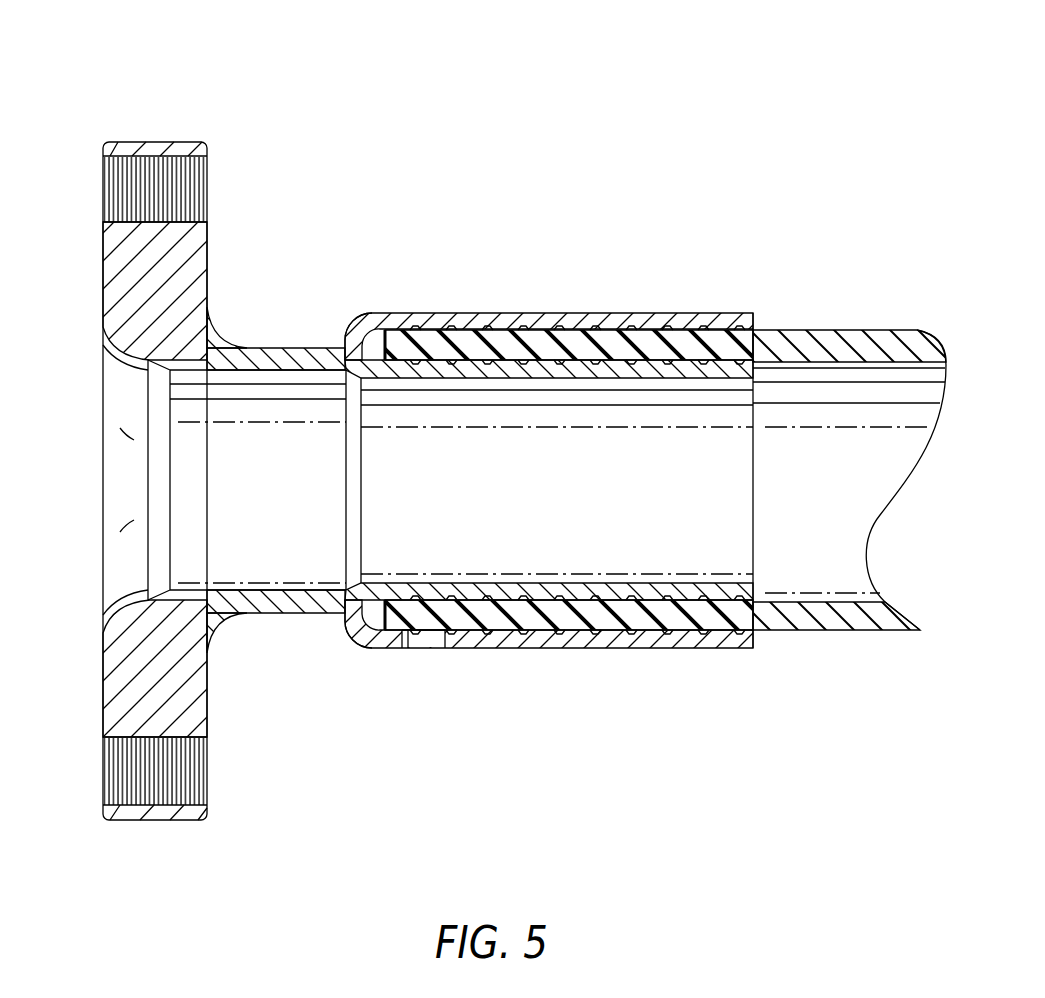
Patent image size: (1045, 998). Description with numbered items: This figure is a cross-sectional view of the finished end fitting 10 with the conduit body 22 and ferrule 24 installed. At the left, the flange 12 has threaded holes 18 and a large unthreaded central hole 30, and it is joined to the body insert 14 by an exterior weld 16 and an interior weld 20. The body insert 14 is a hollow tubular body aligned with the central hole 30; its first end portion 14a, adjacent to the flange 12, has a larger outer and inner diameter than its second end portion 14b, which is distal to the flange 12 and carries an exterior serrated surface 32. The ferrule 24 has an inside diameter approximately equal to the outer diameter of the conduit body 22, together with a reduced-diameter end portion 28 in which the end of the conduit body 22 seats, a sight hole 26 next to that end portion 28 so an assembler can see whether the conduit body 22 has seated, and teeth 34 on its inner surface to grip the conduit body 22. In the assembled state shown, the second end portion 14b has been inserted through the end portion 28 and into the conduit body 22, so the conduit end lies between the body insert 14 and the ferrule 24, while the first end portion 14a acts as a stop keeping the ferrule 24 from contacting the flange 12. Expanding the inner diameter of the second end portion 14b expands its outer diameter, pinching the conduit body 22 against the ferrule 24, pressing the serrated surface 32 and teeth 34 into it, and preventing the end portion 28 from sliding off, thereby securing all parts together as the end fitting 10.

The end fitting 10 is at (582, 137).
The flange 12 is at (172, 150).
The body insert 14 is at (455, 632).
The first end portion 14a is at (268, 346).
The second end portion 14b is at (790, 362).
The exterior weld 16 is at (215, 330).
The threaded holes 18 is at (200, 196).
The interior weld 20 is at (155, 455).
The conduit body 22 is at (860, 340).
The ferrule 24 is at (488, 312).
The sight hole 26 is at (425, 652).
The end portion 28 is at (355, 335).
The central hole 30 is at (113, 485).
The serrated surface 32 is at (580, 348).
The teeth 34 is at (630, 332).